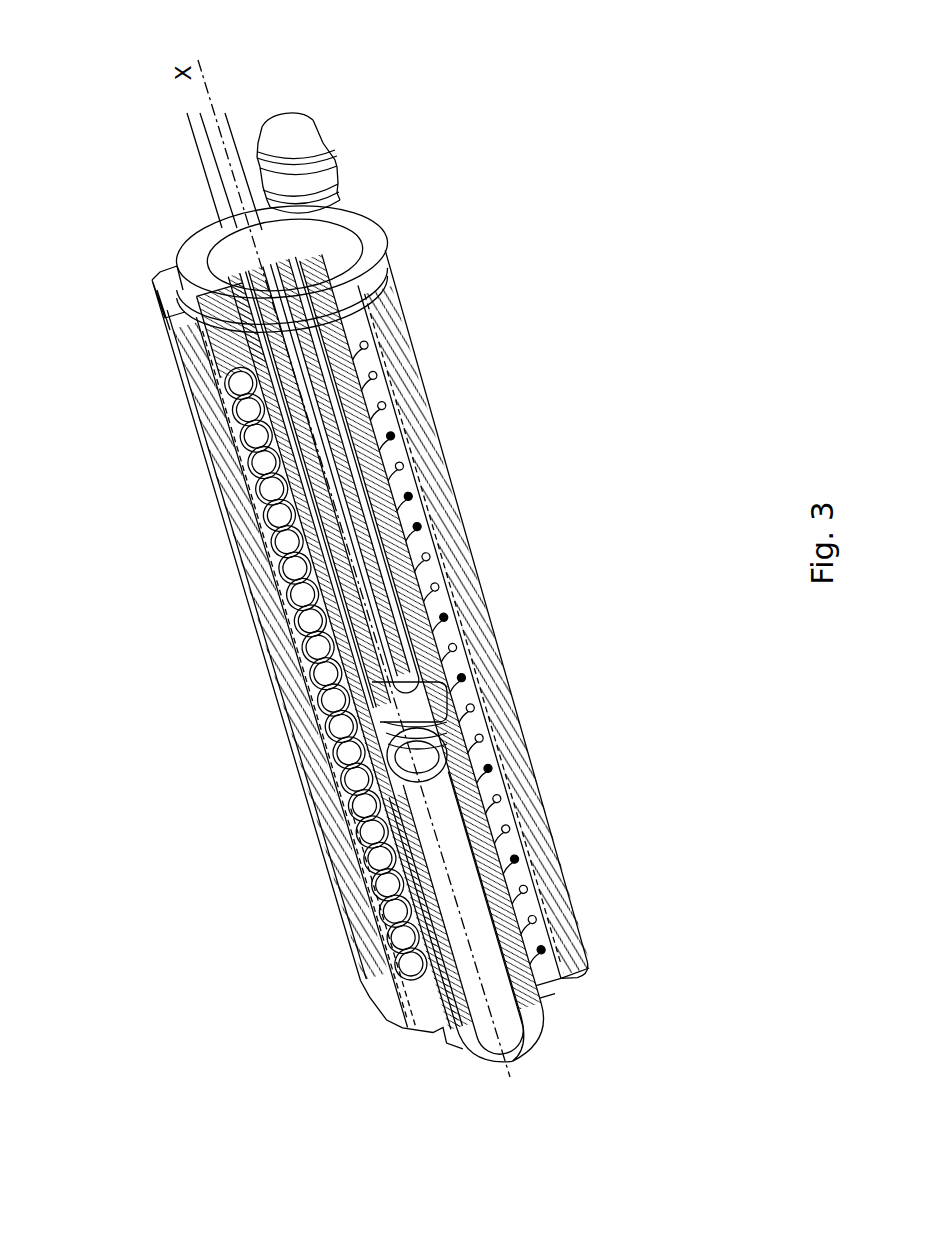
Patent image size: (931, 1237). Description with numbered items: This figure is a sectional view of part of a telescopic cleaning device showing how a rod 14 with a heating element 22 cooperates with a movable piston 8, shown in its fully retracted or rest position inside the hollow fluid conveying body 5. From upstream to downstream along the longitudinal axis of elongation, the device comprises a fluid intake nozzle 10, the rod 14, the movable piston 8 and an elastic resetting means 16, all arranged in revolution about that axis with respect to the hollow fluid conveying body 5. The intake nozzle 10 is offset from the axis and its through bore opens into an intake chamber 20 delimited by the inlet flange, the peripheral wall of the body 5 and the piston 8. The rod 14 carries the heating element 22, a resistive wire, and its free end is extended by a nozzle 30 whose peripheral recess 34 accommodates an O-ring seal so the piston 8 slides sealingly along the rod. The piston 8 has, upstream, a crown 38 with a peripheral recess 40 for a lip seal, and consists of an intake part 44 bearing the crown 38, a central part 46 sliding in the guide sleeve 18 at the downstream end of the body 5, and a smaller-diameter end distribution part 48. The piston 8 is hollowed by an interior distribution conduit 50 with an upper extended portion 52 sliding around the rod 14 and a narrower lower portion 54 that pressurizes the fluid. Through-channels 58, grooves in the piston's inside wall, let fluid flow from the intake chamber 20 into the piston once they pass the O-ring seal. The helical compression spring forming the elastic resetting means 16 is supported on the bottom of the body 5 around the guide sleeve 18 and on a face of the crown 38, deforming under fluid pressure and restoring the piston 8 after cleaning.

The hollow fluid conveying body 5 is at (222, 569).
The movable piston 8 is at (419, 533).
The fluid intake nozzle 10 is at (352, 166).
The rod 14 is at (400, 499).
The elastic resetting means 16 is at (461, 618).
The guide sleeve 18 is at (520, 855).
The intake chamber 20 is at (205, 316).
The heating element 22 is at (180, 182).
The nozzle 30 is at (489, 769).
The peripheral recess 34 is at (455, 733).
The crown 38 is at (393, 348).
The peripheral recess 40 is at (352, 316).
The intake part 44 is at (390, 436).
The central part 46 is at (461, 680).
The end distribution part 48 is at (540, 997).
The interior distribution conduit 50 is at (237, 980).
The upper extended portion 52 is at (270, 645).
The lower portion 54 is at (445, 908).
The through-channels 58 is at (278, 492).